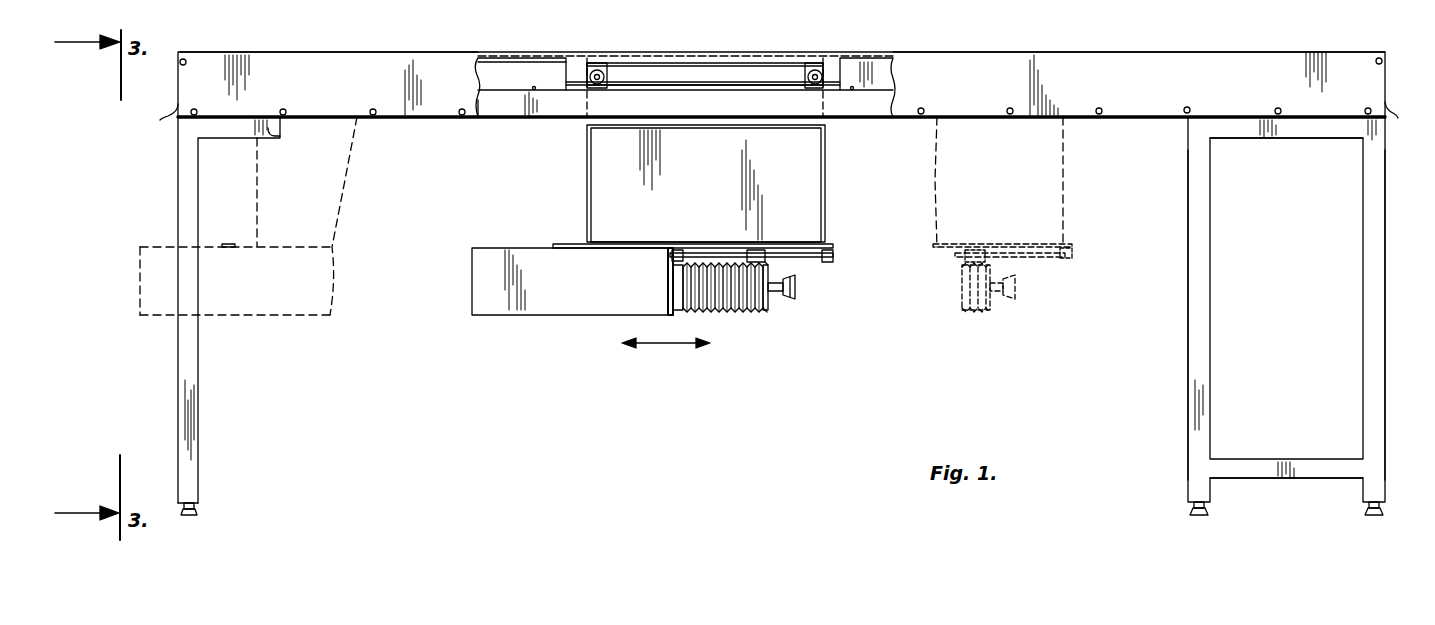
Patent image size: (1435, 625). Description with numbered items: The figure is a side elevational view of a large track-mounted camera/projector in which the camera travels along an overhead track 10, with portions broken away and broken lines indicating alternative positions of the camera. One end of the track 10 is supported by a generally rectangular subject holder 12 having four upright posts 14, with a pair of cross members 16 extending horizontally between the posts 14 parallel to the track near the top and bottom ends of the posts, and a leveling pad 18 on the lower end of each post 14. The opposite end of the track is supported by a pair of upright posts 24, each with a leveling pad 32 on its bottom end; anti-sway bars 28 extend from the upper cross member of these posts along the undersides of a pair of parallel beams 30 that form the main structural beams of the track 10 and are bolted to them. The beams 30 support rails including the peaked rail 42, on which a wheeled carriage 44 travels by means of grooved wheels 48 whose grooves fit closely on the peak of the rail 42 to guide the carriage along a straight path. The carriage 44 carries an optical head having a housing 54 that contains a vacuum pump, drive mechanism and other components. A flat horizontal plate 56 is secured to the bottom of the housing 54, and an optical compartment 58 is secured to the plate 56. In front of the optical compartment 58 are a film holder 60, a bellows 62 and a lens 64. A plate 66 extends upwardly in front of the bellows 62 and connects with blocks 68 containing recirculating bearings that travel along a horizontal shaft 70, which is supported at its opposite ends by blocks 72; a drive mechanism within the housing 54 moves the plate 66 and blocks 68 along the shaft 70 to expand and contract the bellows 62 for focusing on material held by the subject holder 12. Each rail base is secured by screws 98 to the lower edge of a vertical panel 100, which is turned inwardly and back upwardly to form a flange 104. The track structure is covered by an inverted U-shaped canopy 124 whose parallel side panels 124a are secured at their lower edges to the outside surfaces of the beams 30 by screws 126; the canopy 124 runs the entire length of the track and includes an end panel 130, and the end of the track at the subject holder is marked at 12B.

The overhead track 10 is at (1047, 42).
The subject holder 12 is at (1180, 310).
The left end of beam 12B is at (160, 120).
The upright posts 14 is at (1212, 260).
The cross members 16 is at (1318, 131).
The leveling pad 18 is at (1198, 517).
The upright posts 24 is at (192, 360).
The anti-sway bars 28 is at (270, 135).
The beams 30 is at (507, 112).
The leveling pad 32 is at (205, 513).
The rail 42 is at (708, 83).
The wheeled carriage 44 is at (748, 72).
The grooved wheels 48 is at (597, 70).
The housing 54 is at (802, 183).
The flat horizontal plate 56 is at (240, 245).
The optical compartment 58 is at (550, 303).
The film holder 60 is at (672, 313).
The bellows 62 is at (740, 312).
The lens 64 is at (795, 297).
The plate 66 is at (768, 262).
The blocks 68 is at (760, 250).
The horizontal shaft 70 is at (712, 253).
The blocks 72 is at (678, 250).
The screws 98 is at (534, 92).
The vertical panel 100 is at (502, 75).
The flange 104 is at (532, 55).
The canopy 124 is at (957, 45).
The side panels 124a is at (347, 68).
The screws 126 is at (461, 116).
The end panel 130 is at (1410, 115).